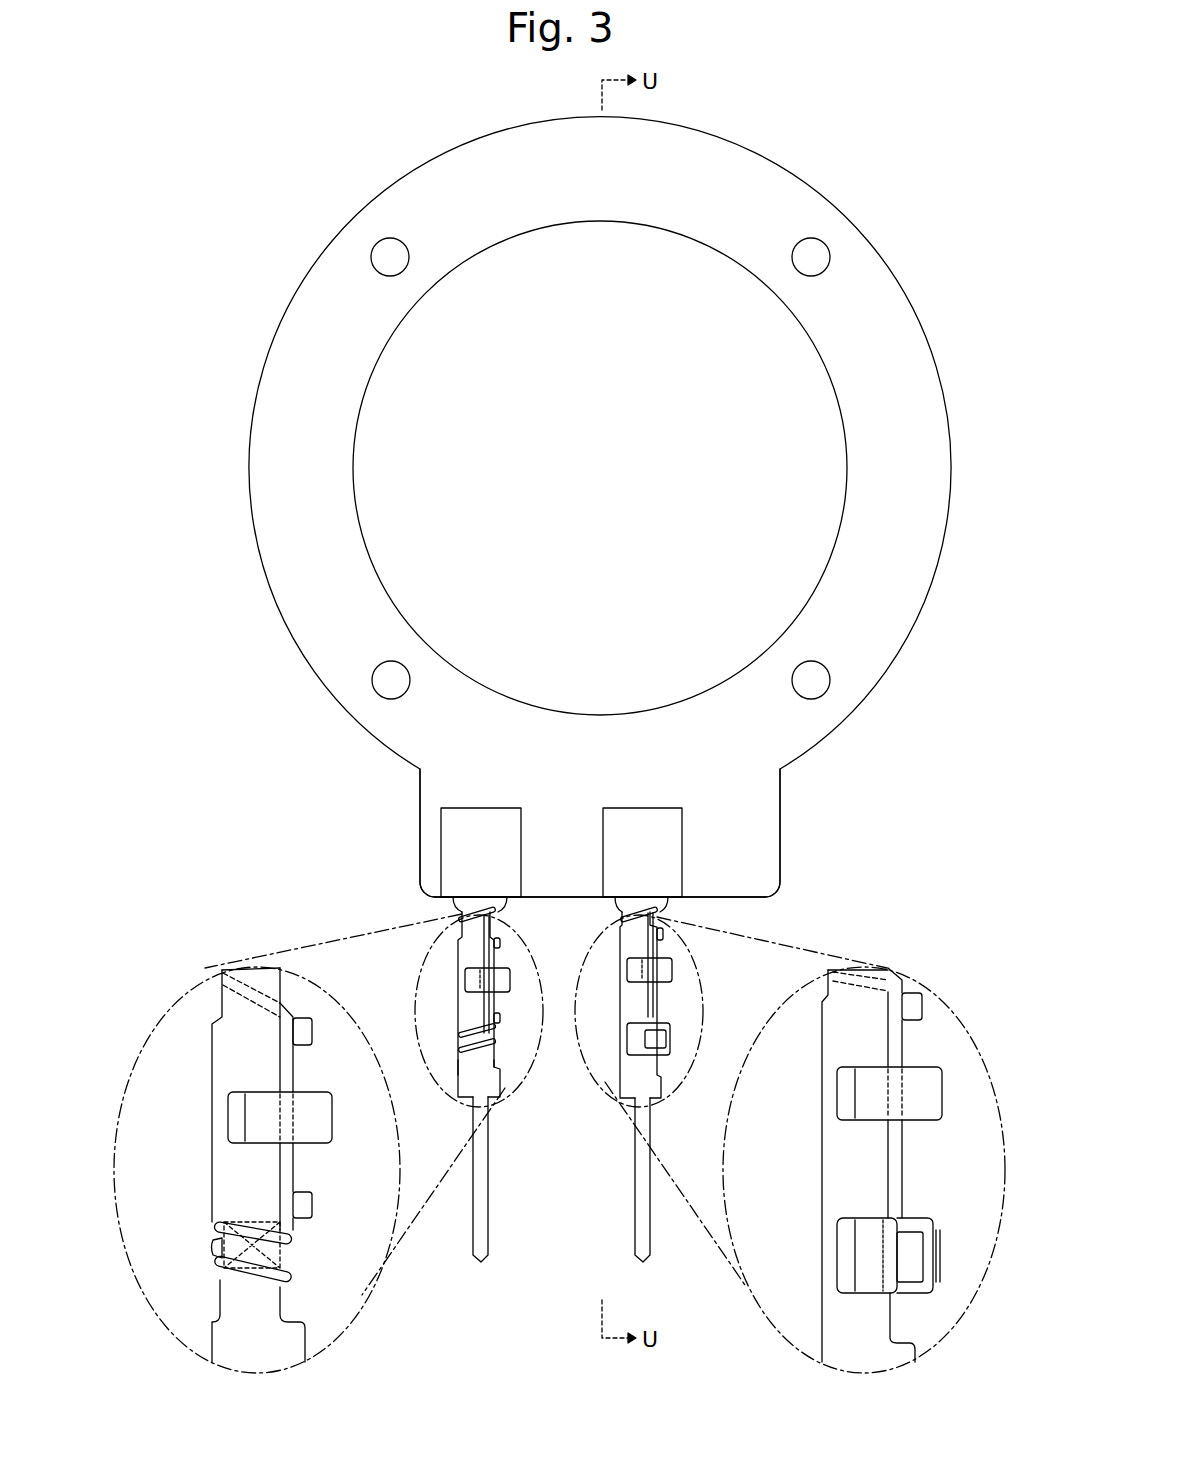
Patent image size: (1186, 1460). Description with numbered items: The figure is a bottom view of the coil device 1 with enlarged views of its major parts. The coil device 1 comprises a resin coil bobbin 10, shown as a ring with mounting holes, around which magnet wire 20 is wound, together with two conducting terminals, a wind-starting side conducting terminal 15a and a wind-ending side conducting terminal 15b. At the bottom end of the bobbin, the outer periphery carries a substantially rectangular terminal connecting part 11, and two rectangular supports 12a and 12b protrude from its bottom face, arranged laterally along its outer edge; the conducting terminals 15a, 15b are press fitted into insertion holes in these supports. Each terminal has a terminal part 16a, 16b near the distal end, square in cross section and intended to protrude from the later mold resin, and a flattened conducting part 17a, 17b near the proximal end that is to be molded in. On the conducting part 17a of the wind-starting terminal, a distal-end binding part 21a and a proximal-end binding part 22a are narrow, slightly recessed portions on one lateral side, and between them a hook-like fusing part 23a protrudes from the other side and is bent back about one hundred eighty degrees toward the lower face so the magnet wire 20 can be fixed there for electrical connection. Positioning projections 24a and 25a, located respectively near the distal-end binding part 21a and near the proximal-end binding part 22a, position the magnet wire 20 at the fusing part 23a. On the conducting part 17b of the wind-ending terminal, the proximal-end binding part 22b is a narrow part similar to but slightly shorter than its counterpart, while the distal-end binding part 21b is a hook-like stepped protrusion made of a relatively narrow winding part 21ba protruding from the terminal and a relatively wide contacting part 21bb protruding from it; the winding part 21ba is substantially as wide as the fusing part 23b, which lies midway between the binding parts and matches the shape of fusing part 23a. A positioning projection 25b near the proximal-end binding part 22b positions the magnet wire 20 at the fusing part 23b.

The coil device 1 is at (282, 157).
The coil bobbin 10 is at (818, 192).
The terminal connecting part 11 is at (421, 809).
The support 12a is at (481, 828).
The support 12b is at (647, 828).
The wind-starting side conducting terminal 15a is at (346, 1129).
The wind-ending side conducting terminal 15b is at (789, 1129).
The terminal part 16a is at (473, 1237).
The terminal part 16b is at (652, 1237).
The conducting part 17a is at (458, 977).
The conducting part 17b is at (620, 1042).
The magnet wire 20 is at (511, 979).
The wind-starting side distal-end binding part 21a is at (459, 1079).
The wind-ending side distal-end binding part 21b is at (671, 1040).
The winding part 21ba is at (943, 1253).
The contacting part 21bb is at (863, 1253).
The wind-starting side proximal-end binding part 22a is at (455, 912).
The wind-ending side proximal-end binding part 22b is at (621, 912).
The wind-starting side wire-connecting part 23a is at (511, 990).
The wind-ending side wire-connecting part 23b is at (673, 972).
The positioning projection 24a is at (313, 1205).
The positioning projection 25a is at (313, 1030).
The positioning projection 25b is at (923, 1005).